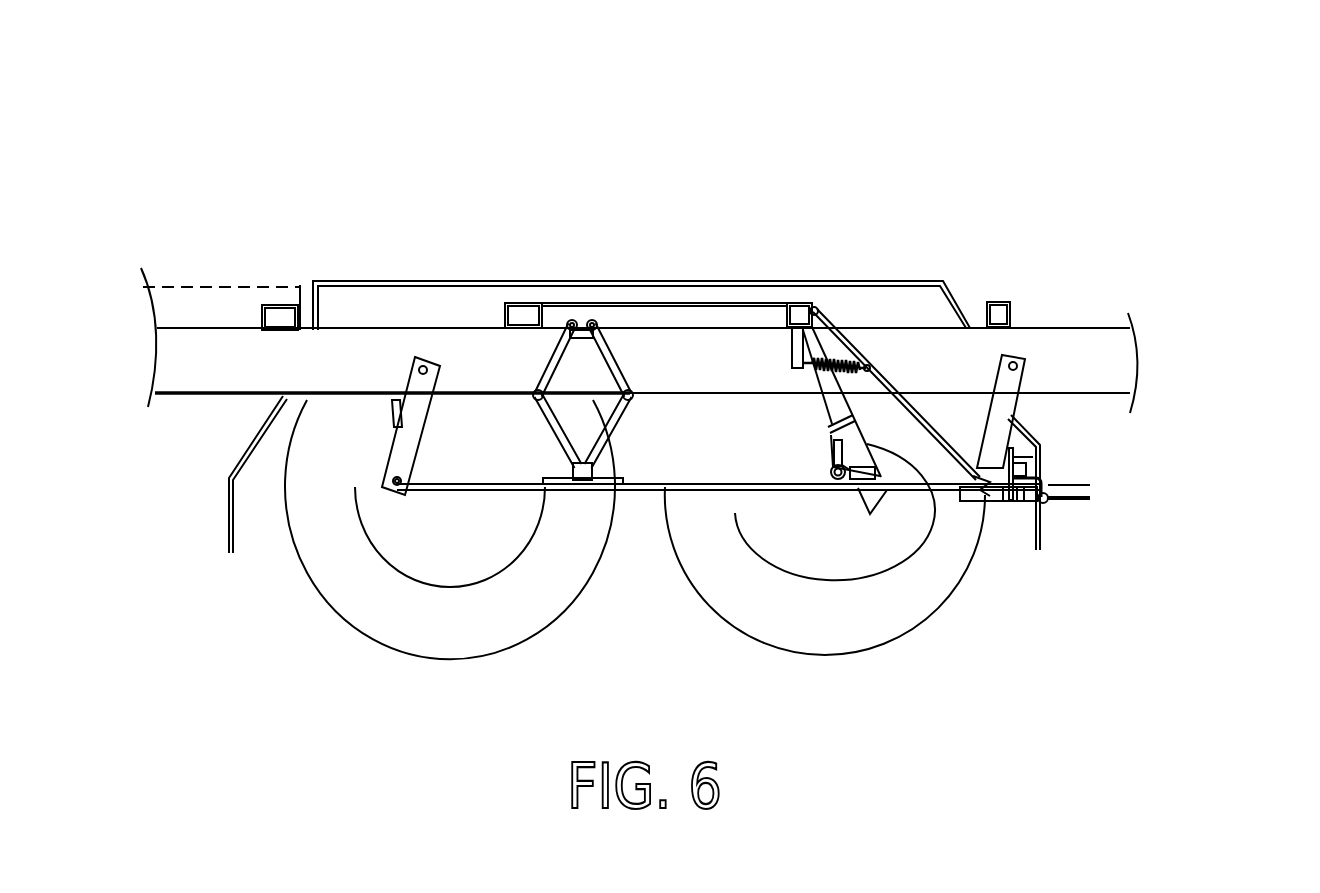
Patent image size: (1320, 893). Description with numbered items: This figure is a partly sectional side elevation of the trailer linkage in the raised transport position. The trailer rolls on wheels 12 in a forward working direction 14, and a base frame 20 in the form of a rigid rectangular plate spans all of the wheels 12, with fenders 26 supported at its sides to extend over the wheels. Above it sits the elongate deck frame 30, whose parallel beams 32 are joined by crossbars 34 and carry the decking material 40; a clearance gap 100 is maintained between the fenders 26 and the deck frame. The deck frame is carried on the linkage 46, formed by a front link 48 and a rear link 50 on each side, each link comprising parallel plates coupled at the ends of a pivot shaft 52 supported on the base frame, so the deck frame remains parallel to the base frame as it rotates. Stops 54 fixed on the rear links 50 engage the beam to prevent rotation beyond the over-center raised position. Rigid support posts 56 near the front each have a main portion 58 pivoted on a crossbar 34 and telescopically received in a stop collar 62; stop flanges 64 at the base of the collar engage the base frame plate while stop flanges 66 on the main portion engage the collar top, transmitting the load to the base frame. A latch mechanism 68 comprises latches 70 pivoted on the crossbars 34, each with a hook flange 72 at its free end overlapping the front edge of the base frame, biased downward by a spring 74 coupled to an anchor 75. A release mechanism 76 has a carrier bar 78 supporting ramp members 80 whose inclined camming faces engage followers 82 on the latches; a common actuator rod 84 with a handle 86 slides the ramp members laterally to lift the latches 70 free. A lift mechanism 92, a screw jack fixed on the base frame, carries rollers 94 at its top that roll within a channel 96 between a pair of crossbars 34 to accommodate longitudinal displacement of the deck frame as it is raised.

The wheels 12 is at (497, 643).
The forward working direction 14 is at (645, 15).
The base frame 20 is at (655, 490).
The fenders 26 is at (695, 277).
The deck frame 30 is at (214, 322).
The beams 32 is at (1085, 350).
The crossbars 34 is at (520, 303).
The decking material 40 is at (250, 285).
The linkage 46 is at (1082, 431).
The front link 48 is at (984, 352).
The rear link 50 is at (396, 458).
The pivot shaft 52 is at (421, 363).
The stops 54 is at (386, 418).
The rigid support posts 56 is at (800, 436).
The main portion 58 is at (825, 388).
The stop collar 62 is at (923, 496).
The stop flanges 64 is at (862, 480).
The stop flanges 66 is at (822, 434).
The latch mechanism 68 is at (904, 368).
The latches 70 is at (922, 417).
The hook flange 72 is at (982, 500).
The spring 74 is at (867, 365).
The anchor 75 is at (793, 348).
The release mechanism 76 is at (1064, 540).
The carrier bar 78 is at (1000, 503).
The ramp members 80 is at (1035, 457).
The follower 82 is at (1010, 428).
The common actuator rod 84 is at (1047, 507).
The handle 86 is at (1090, 498).
The lift mechanism 92 is at (632, 348).
The rollers 94 is at (597, 322).
The channel 96 is at (554, 303).
The clearance gap 100 is at (307, 272).